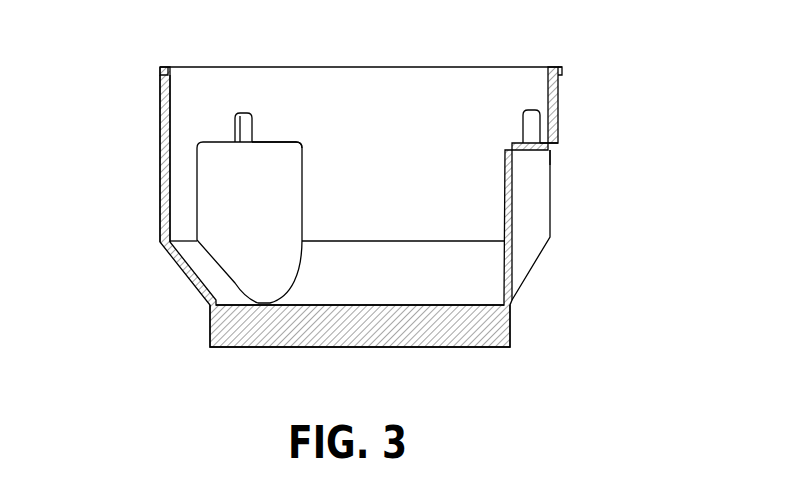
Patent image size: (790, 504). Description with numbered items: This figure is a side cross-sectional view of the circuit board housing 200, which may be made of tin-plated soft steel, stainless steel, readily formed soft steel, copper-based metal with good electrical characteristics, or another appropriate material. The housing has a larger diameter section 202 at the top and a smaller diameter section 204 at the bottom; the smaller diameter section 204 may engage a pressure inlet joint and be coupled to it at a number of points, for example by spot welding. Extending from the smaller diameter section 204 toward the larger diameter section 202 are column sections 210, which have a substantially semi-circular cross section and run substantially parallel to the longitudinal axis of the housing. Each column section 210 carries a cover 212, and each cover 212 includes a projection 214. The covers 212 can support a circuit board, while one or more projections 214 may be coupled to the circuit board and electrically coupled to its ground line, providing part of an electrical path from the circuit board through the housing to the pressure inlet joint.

The circuit board housing 200 is at (530, 272).
The larger diameter section 202 is at (166, 153).
The smaller diameter section 204 is at (208, 328).
The column section 210 is at (212, 225).
The cover 212 is at (262, 140).
The projection 214 is at (237, 113).